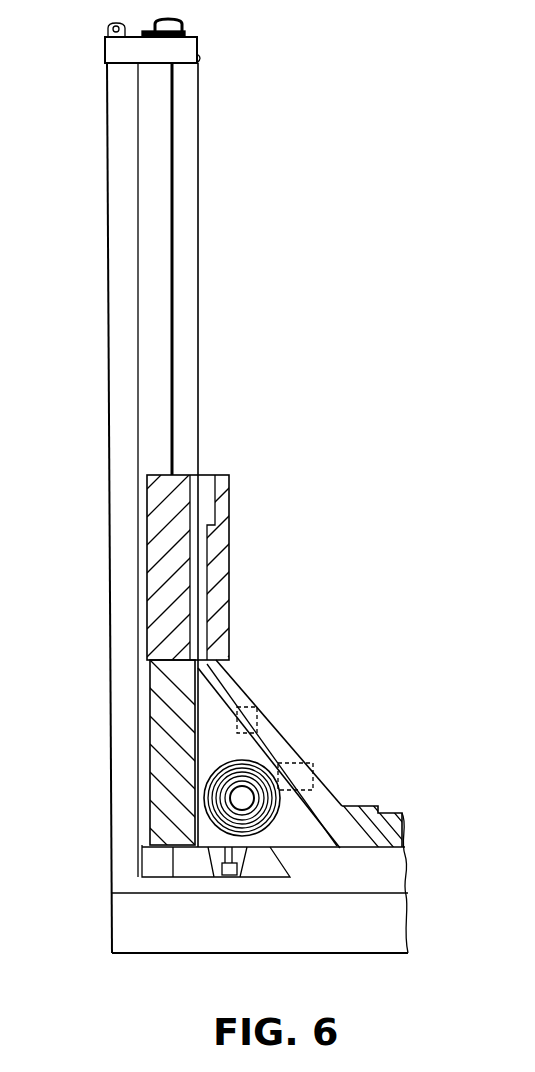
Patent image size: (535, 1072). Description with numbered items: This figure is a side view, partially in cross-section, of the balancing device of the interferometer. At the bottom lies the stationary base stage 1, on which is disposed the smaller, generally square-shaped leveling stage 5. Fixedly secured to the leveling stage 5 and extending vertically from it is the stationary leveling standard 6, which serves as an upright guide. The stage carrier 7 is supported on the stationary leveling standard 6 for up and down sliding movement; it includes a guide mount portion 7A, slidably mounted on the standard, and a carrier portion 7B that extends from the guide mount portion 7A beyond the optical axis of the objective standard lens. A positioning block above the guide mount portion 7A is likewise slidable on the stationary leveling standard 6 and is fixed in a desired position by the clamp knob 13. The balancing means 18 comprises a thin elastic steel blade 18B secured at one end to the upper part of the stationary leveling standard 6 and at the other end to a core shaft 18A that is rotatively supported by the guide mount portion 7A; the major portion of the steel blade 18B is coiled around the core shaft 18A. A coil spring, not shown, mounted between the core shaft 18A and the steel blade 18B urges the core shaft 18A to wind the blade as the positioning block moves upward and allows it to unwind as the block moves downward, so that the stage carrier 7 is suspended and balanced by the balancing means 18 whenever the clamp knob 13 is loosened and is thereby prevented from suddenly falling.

The stationary base stage 1 is at (372, 952).
The leveling stage 5 is at (364, 877).
The stationary leveling standard 6 is at (105, 298).
The stage carrier 7 is at (365, 803).
The guide mount portion 7A is at (158, 693).
The carrier portion 7B is at (215, 862).
The clamp knob 13 is at (230, 505).
The balancing means 18 is at (202, 242).
The core shaft 18A is at (246, 797).
The steel blade 18B is at (200, 402).